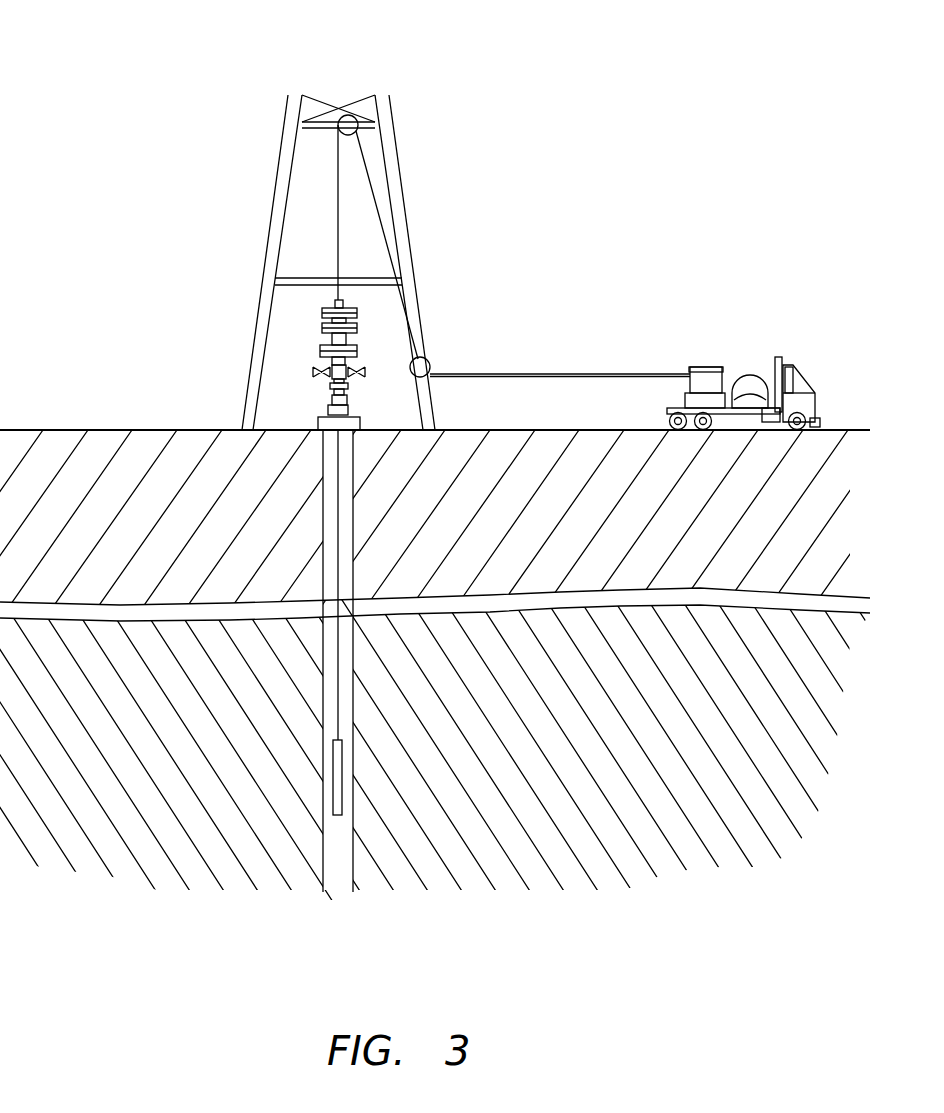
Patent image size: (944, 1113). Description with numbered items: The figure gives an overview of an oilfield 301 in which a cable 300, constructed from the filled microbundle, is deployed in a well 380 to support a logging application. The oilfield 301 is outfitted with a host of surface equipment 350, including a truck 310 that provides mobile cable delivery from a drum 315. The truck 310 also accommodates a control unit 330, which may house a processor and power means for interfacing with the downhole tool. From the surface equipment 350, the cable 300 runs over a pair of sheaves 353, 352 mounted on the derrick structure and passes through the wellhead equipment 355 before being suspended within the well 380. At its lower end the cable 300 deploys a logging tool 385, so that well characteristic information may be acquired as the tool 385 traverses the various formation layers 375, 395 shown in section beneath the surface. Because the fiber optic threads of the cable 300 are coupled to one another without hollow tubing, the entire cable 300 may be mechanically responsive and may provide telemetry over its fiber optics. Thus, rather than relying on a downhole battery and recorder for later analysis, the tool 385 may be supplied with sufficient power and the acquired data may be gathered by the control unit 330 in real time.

The cable 300 is at (534, 374).
The oilfield 301 is at (43, 416).
The truck 310 is at (789, 332).
The drum 315 is at (750, 378).
The control unit 330 is at (703, 367).
The surface equipment 350 is at (118, 48).
The lower sheave 352 is at (430, 358).
The upper sheave 353 is at (347, 116).
The wellhead tool string 355 is at (304, 328).
The formation layer 375 is at (132, 531).
The well 380 is at (330, 466).
The logging tool 385 is at (338, 800).
The formation layer 395 is at (715, 761).